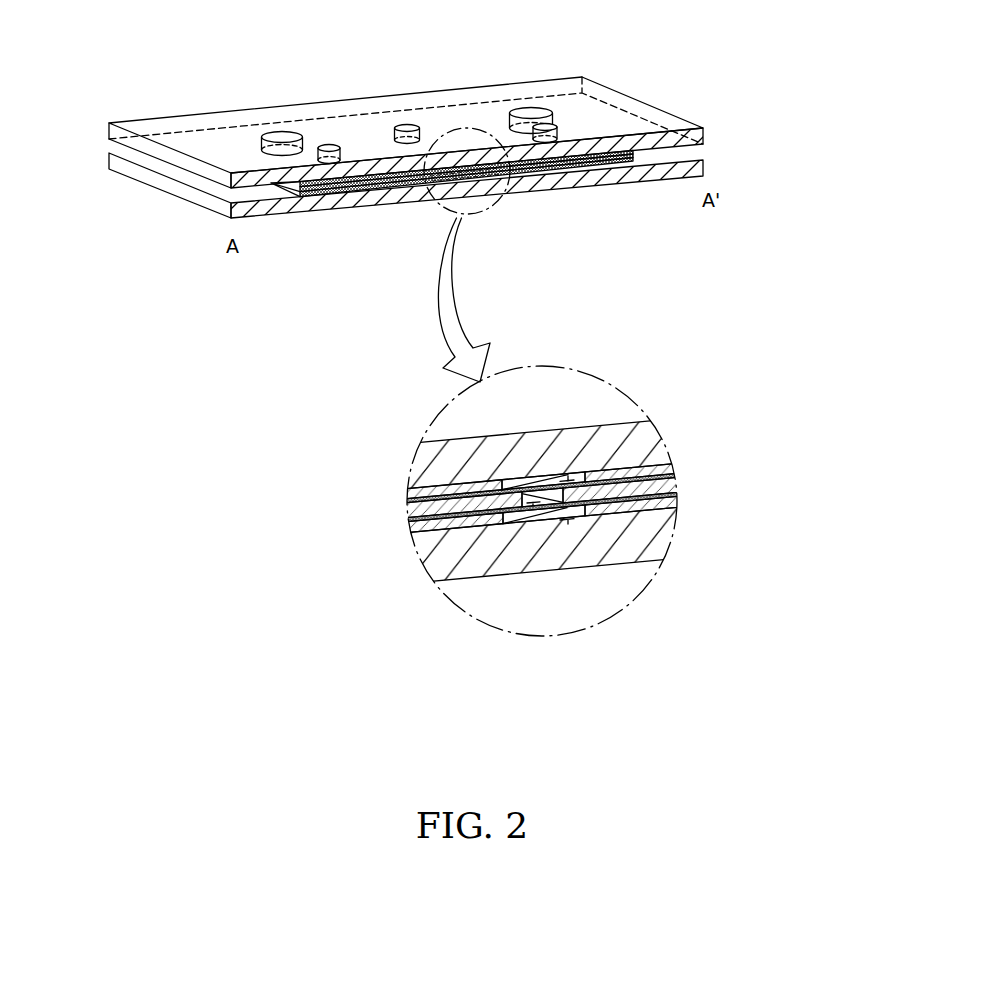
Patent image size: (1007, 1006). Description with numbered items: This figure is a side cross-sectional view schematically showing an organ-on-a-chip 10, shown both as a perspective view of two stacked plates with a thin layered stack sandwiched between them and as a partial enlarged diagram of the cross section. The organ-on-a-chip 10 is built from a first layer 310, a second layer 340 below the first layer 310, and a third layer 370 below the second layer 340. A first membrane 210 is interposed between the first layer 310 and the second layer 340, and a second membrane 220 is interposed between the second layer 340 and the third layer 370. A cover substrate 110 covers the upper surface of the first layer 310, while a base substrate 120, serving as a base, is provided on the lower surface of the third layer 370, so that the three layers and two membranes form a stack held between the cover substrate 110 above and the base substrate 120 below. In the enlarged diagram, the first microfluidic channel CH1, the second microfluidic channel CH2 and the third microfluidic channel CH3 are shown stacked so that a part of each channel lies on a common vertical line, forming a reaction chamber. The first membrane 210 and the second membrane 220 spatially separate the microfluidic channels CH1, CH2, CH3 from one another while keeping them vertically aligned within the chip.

The organ-on-a-chip 10 is at (702, 39).
The cover substrate 110 is at (705, 136).
The base substrate 120 is at (705, 167).
The first layer 310 is at (368, 180).
The second layer 340 is at (557, 168).
The third layer 370 is at (615, 167).
The first membrane 210 is at (607, 470).
The second membrane 220 is at (623, 507).
The first microfluidic channel CH1 is at (567, 479).
The second microfluidic channel CH2 is at (533, 506).
The third microfluidic channel CH3 is at (567, 523).